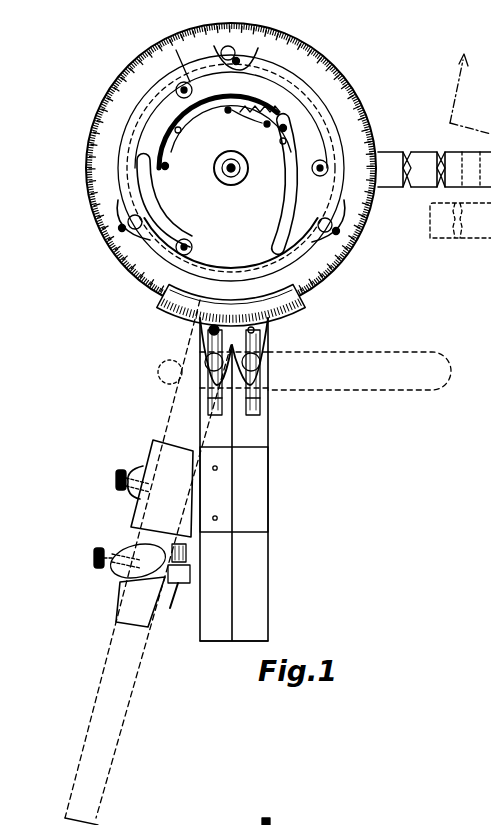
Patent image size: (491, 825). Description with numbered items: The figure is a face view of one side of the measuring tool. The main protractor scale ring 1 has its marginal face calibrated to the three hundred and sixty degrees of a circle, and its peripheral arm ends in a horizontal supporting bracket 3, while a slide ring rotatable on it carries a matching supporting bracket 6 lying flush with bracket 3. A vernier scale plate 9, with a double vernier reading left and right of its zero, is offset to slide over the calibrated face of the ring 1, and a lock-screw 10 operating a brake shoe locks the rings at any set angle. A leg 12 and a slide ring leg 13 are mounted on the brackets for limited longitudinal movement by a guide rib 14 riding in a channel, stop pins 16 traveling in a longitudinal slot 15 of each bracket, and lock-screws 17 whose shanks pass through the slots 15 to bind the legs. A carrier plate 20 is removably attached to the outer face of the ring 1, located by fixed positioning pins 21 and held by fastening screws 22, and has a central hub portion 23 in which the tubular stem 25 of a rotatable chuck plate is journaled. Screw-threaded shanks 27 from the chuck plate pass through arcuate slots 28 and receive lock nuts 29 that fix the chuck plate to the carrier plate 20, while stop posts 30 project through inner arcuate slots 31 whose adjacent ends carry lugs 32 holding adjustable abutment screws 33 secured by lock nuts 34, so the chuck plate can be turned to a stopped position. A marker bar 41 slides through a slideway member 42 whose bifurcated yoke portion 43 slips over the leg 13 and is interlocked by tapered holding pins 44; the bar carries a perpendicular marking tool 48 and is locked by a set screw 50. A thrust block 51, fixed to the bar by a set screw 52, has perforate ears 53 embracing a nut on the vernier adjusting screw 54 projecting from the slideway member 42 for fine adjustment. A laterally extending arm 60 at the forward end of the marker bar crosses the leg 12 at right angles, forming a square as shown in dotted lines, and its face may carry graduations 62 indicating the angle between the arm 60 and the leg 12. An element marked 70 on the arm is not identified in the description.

The main protractor scale ring 1 is at (90, 192).
The supporting bracket 3 is at (262, 334).
The supporting bracket 6 is at (173, 330).
The vernier scale plate 9 is at (165, 305).
The lock-screw 10 is at (207, 326).
The leg 12 is at (272, 436).
The slide ring leg 13 is at (200, 640).
The longitudinal guide rib 14 is at (210, 400).
The longitudinal slot 15 is at (208, 348).
The stop pins 16 is at (206, 360).
The lock-screws 17 is at (200, 372).
The carrier plate 20 is at (231, 170).
The positioning pins 21 is at (248, 44).
The fastening screws 22 is at (232, 46).
The hub portion 23 is at (247, 175).
The tubular stem 25 is at (231, 186).
The screw-threaded shanks 27 is at (178, 97).
The arcuate slots 28 is at (165, 200).
The lock nuts 29 is at (178, 52).
The stop posts 30 is at (169, 167).
The arcuate slots 31 is at (182, 133).
The lug or ear 32 is at (260, 99).
The abutment screw 33 is at (226, 113).
The lock nut 34 is at (246, 124).
The marker bar 41 is at (112, 612).
The slideway member 42 is at (138, 496).
The bifurcated yoke portion 43 is at (268, 498).
The tapered holding pins 44 is at (218, 468).
The marking tool 48 is at (268, 820).
The set screw 50 is at (115, 481).
The thrust block 51 is at (120, 580).
The set screw 52 is at (93, 558).
The perforate ears 53 is at (190, 573).
The vernier adjusting screw 54 is at (186, 552).
The laterally extending arm 60 is at (396, 151).
The graduations 62 is at (482, 206).
The bar section 70 is at (471, 169).